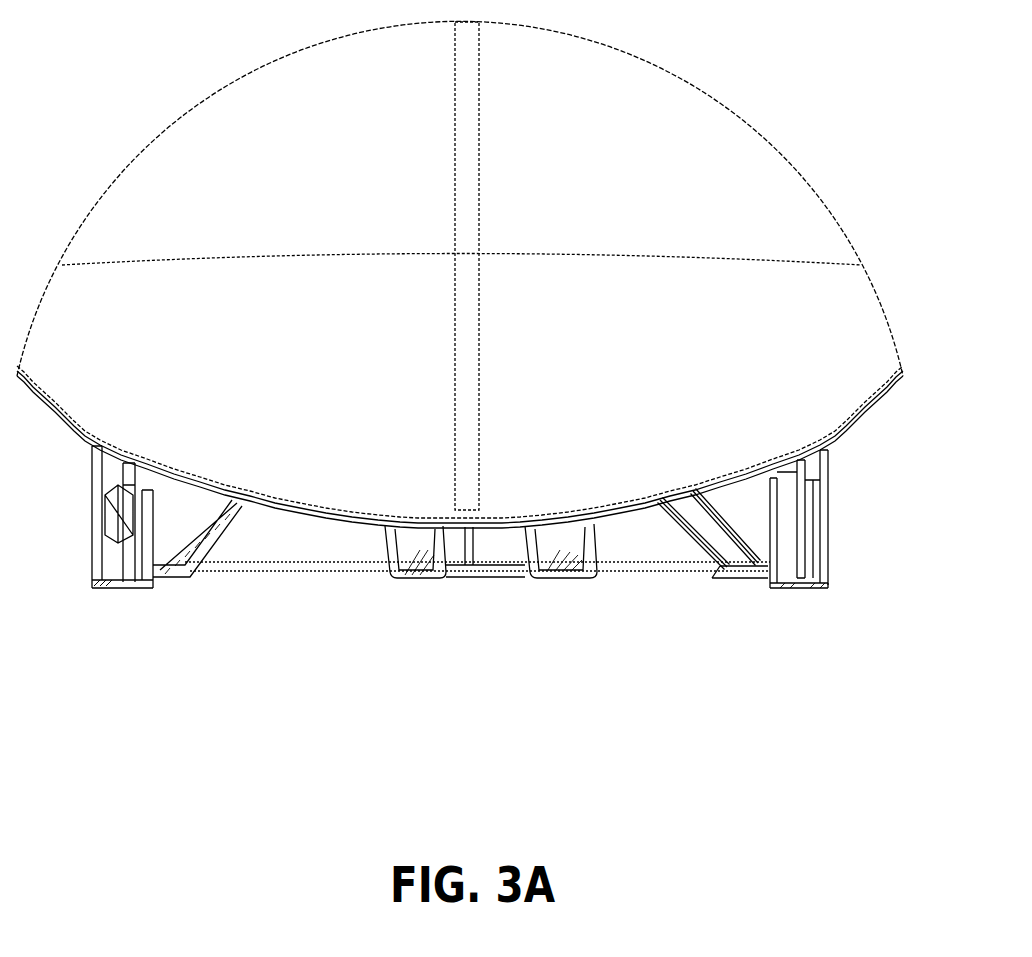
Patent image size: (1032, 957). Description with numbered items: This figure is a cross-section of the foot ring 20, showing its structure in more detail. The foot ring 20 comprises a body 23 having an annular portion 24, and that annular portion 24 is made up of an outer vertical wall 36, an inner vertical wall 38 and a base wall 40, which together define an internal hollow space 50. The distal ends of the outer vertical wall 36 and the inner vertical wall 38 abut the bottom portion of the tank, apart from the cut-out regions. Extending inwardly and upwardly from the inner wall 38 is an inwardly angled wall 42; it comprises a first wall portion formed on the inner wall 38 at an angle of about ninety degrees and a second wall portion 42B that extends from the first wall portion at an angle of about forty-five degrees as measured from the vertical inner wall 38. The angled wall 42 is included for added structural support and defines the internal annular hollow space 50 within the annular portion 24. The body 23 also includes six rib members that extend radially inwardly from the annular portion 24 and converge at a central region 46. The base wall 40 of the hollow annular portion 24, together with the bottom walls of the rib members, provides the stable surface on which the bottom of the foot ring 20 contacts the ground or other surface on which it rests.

The foot ring 20 is at (866, 526).
The body 23 is at (92, 515).
The annular portion 24 is at (807, 520).
The outer vertical wall 36 is at (797, 587).
The inner vertical wall 38 is at (770, 522).
The base wall 40 is at (807, 553).
The inwardly angled wall 42 is at (695, 552).
The second wall portion 42B is at (678, 538).
The central region 46 is at (418, 579).
The internal hollow space 50 is at (748, 480).